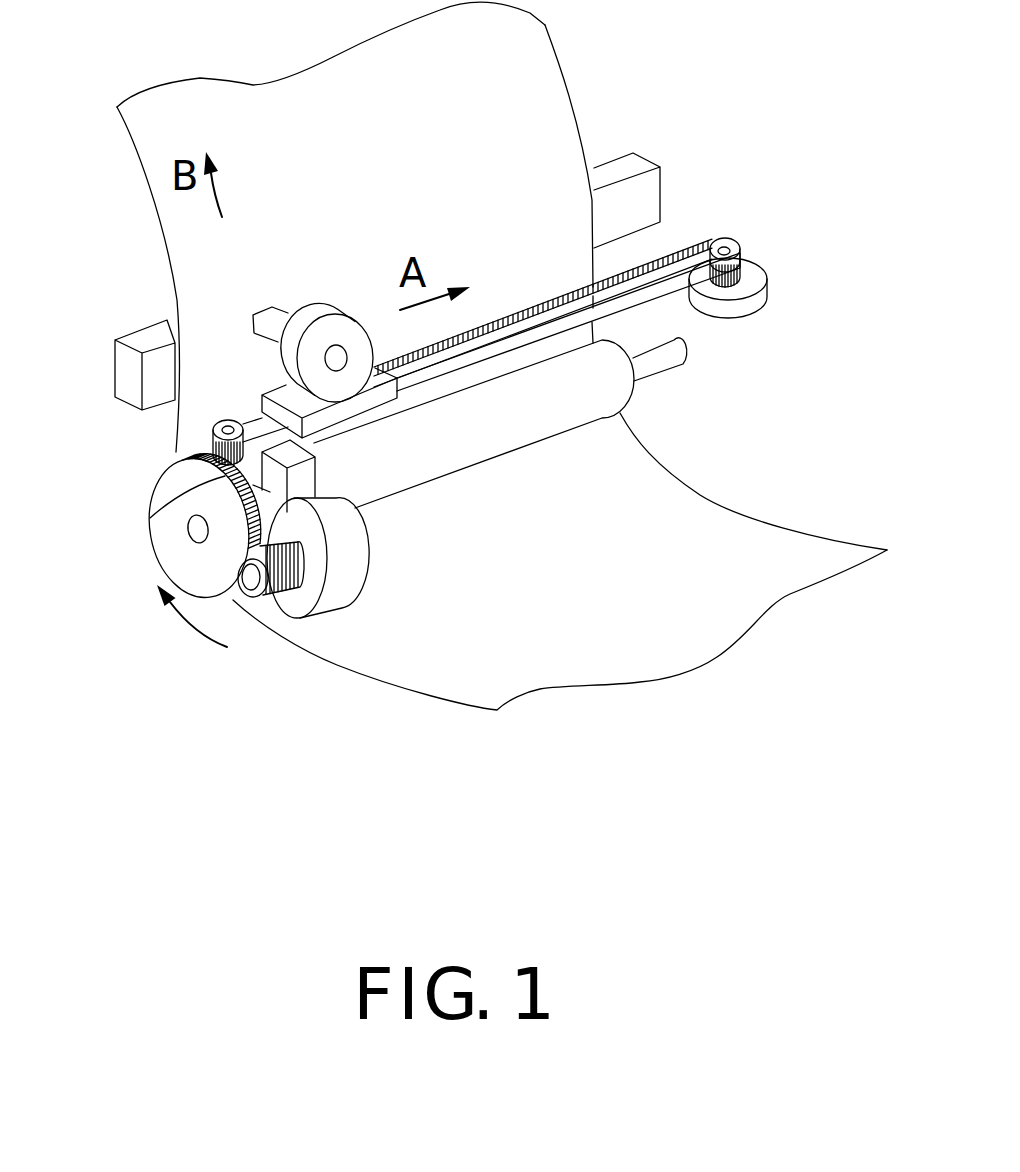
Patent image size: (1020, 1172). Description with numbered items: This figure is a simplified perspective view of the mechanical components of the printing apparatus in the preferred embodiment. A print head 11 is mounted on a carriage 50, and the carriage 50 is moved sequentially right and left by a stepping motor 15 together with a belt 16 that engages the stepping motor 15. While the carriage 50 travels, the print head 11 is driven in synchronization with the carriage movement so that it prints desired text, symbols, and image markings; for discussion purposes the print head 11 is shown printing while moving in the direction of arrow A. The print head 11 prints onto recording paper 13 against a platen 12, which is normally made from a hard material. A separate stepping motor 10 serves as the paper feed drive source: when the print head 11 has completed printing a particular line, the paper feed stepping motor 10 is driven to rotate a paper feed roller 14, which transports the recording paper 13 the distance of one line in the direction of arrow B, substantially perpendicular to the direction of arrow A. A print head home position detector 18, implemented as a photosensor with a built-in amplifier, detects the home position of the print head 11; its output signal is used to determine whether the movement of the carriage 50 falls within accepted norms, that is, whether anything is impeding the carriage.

The stepping motor 10 is at (345, 580).
The print head 11 is at (271, 334).
The platen 12 is at (133, 340).
The recording paper 13 is at (535, 107).
The paper feed roller 14 is at (580, 397).
The stepping motor 15 is at (750, 305).
The belt 16 is at (682, 250).
The print head home position detector 18 is at (150, 518).
The carriage 50 is at (360, 403).